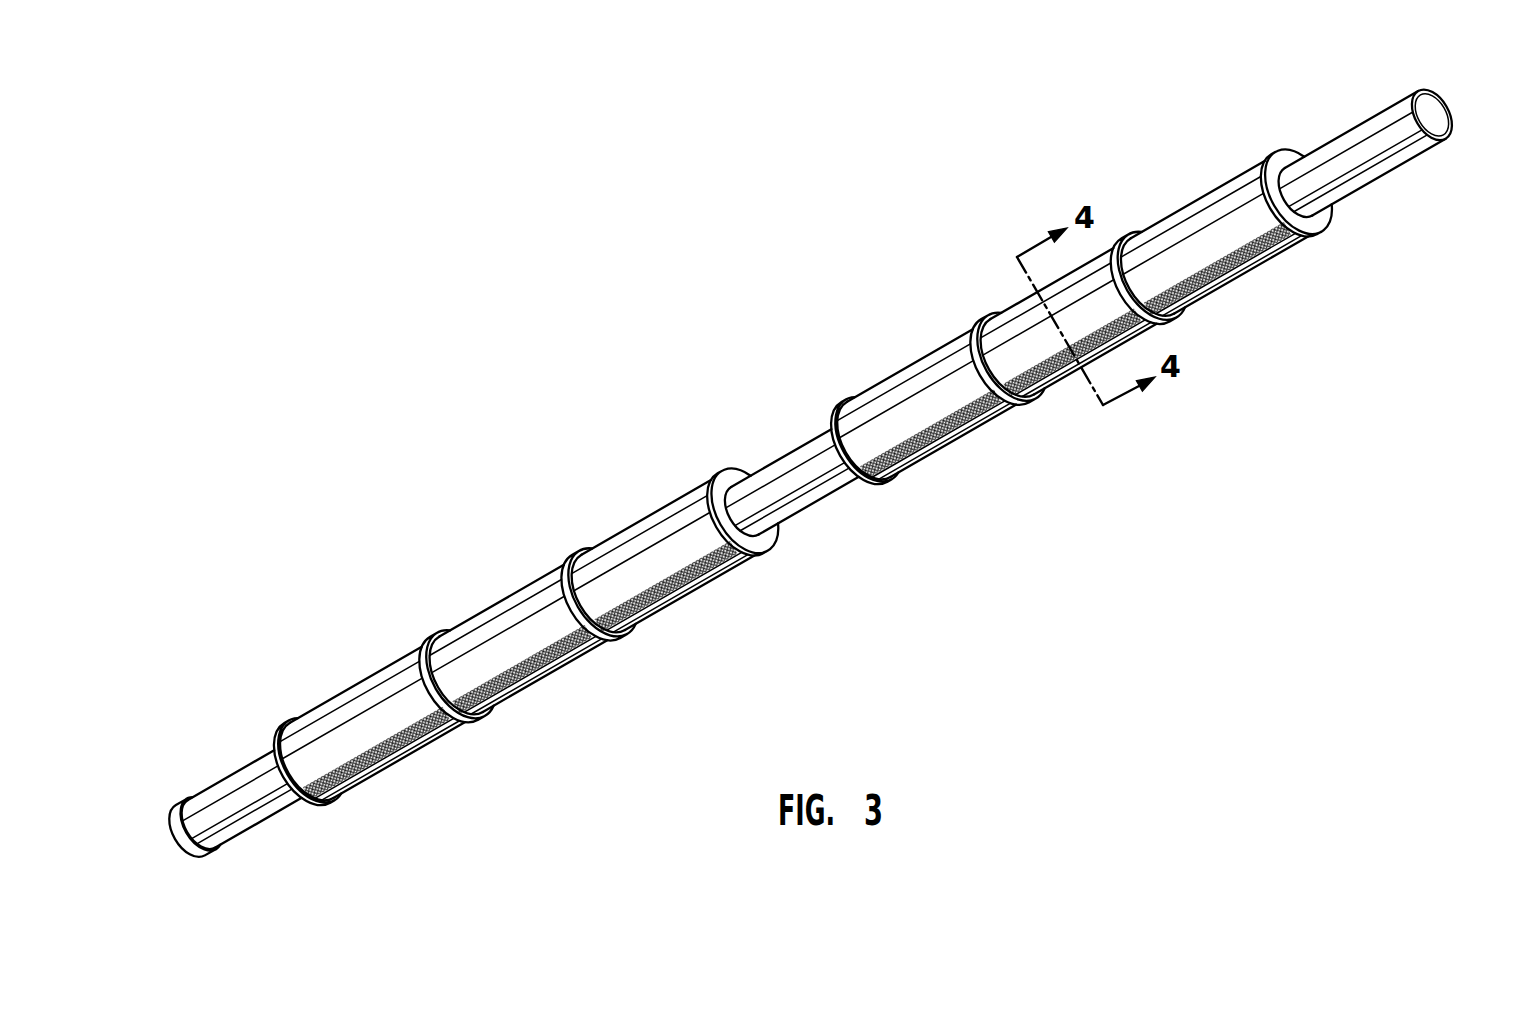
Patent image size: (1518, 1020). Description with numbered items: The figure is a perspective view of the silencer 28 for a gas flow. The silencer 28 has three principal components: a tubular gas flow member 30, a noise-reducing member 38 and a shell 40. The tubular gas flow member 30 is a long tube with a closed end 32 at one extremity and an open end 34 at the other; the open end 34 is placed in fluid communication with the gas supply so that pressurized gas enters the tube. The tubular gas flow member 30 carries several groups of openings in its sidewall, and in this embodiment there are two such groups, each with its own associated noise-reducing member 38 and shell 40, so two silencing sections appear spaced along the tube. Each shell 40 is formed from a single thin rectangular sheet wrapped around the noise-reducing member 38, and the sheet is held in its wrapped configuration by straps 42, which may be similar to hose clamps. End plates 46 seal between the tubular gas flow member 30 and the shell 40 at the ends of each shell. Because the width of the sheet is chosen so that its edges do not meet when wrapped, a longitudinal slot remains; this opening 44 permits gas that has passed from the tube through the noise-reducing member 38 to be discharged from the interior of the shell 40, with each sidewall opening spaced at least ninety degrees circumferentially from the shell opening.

The silencer 28 is at (785, 400).
The tubular gas flow member 30 is at (1376, 183).
The closed end 32 is at (178, 821).
The open end 34 is at (1436, 117).
The noise-reducing member 38 is at (880, 474).
The shell 40 is at (640, 540).
The straps 42 is at (437, 655).
The opening 44 is at (747, 548).
The end plates 46 is at (284, 733).